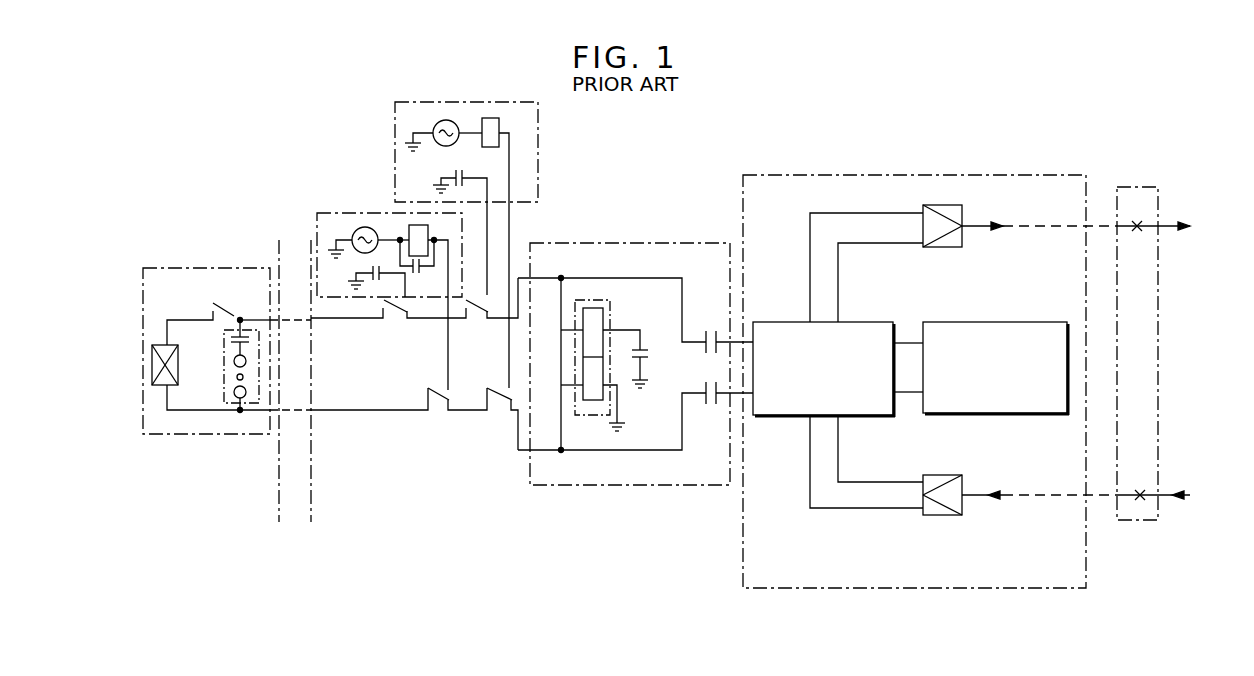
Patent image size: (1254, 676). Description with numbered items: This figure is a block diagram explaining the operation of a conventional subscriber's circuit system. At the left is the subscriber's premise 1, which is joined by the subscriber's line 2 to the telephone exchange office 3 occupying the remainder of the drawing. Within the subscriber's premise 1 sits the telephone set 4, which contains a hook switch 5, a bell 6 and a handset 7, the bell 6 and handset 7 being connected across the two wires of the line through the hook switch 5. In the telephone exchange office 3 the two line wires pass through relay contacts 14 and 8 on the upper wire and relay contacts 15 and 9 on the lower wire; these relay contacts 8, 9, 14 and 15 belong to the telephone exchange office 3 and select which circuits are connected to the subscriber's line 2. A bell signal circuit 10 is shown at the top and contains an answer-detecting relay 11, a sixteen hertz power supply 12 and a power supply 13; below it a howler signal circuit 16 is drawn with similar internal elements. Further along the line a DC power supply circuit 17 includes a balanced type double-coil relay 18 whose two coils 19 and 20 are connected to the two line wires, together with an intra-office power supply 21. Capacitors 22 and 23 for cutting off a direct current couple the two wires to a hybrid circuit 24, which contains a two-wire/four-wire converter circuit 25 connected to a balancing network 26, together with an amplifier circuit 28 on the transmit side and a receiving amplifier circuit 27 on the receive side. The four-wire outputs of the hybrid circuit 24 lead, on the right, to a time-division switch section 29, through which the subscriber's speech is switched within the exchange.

The subscriber's premise 1 is at (206, 519).
The subscriber's line 2 is at (290, 386).
The telephone exchange office 3 is at (413, 519).
The telephone set 4 is at (201, 434).
The hook switch 5 is at (222, 306).
The bell 6 is at (222, 352).
The handset 7 is at (178, 362).
The relay contact 8 is at (474, 319).
The relay contact 9 is at (499, 411).
The bell signal circuit 10 is at (486, 230).
The answer-detecting relay 11 is at (491, 118).
The 16Hz power supply 12 is at (446, 119).
The power supply 13 is at (464, 173).
The relay contact 14 is at (395, 318).
The relay contact 15 is at (437, 411).
The howler signal circuit 16 is at (380, 214).
The DC power supply circuit 17 is at (635, 377).
The balanced type double-coil relay 18 is at (604, 327).
The coil 19 is at (583, 343).
The coil 20 is at (593, 400).
The intra-office power supply 21 is at (648, 355).
The capacitor 22 is at (711, 333).
The capacitor 23 is at (711, 408).
The hybrid circuit 24 is at (914, 406).
The two-wire/four-wire converter circuit 25 is at (855, 322).
The balancing network 26 is at (1039, 322).
The receiving amplifier circuit 27 is at (945, 515).
The amplifier circuit 28 is at (963, 207).
The time-division switch section 29 is at (1160, 425).